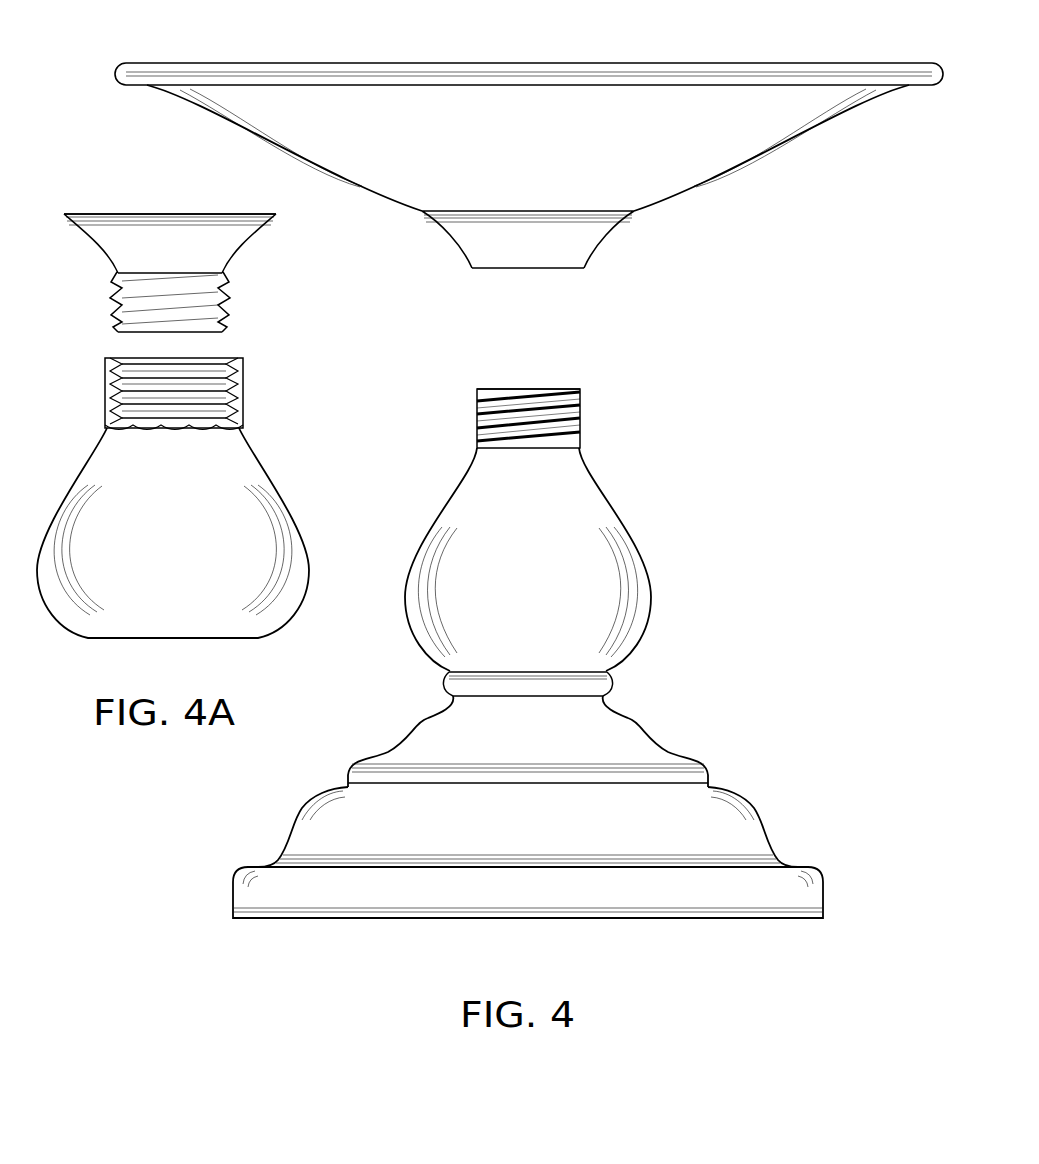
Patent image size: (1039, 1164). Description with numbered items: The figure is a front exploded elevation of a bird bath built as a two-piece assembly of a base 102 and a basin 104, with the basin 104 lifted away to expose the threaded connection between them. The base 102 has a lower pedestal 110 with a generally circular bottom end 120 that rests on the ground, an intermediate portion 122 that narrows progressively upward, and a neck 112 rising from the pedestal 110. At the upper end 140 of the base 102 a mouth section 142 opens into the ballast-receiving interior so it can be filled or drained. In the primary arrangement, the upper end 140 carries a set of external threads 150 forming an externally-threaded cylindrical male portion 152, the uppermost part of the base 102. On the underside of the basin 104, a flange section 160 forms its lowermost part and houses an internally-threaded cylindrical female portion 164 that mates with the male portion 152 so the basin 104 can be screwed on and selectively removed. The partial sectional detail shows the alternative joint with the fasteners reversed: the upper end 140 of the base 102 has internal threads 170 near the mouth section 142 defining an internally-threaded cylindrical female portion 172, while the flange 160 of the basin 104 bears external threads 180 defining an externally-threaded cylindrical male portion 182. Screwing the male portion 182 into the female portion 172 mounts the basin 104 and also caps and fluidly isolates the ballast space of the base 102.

In FIG. 4, the base 102 is at (246, 793).
In FIG. 4, the basin 104 is at (743, 205).
In FIG. 4, the pedestal 110 is at (790, 838).
In FIG. 4, the neck 112 is at (637, 494).
In FIG. 4, the bottom end 120 is at (830, 893).
In FIG. 4, the intermediate portion 122 is at (705, 746).
In FIG. 4, the upper end 140 is at (462, 395).
In FIG. 4, the mouth section 142 is at (561, 386).
In FIG. 4, the external threads 150 is at (577, 427).
In FIG. 4, the externally-threaded cylindrical male portion 152 is at (475, 420).
In FIG. 4, the flange section 160 is at (607, 242).
In FIG. 4A, the flange section 160 is at (250, 242).
In FIG. 4, the internally-threaded cylindrical female portion 164 is at (539, 271).
In FIG. 4A, the internal threads 170 is at (187, 393).
In FIG. 4A, the internally-threaded cylindrical female portion 172 is at (254, 403).
In FIG. 4A, the external threads 180 is at (112, 313).
In FIG. 4A, the externally-threaded cylindrical male portion 182 is at (225, 307).